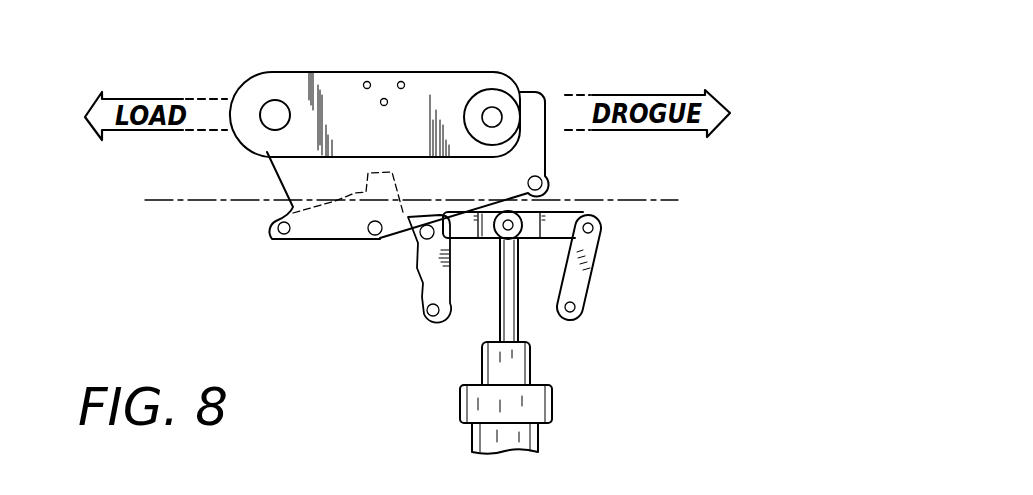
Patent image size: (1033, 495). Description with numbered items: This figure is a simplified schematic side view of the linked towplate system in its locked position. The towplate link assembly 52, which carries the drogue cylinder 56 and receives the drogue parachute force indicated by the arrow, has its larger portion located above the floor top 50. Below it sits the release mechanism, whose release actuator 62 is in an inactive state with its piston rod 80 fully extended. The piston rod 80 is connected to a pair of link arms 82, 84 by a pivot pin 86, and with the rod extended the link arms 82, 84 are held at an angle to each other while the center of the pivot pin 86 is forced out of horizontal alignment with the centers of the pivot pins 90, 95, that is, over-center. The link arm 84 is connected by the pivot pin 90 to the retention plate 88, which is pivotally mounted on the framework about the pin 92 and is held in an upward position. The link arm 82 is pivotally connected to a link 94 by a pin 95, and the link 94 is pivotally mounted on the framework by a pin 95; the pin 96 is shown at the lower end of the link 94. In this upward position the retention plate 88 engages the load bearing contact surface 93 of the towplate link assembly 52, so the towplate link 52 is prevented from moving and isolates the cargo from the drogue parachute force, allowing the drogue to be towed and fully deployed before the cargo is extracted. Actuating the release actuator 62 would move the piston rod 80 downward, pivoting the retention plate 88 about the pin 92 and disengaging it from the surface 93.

The floor top 50 is at (170, 202).
The towplate link assembly 52 is at (273, 181).
The drogue cylinder 56 is at (512, 105).
The release actuator 62 is at (553, 405).
The piston rod 80 is at (497, 322).
The link arm 82 is at (563, 213).
The link arm 84 is at (474, 243).
The pivot pin 86 is at (536, 243).
The retention plate 88 is at (417, 274).
The pivot pin 90 is at (414, 243).
The pin 92 is at (426, 312).
The contact surface 93 is at (405, 217).
The link 94 is at (597, 276).
The pin 95 is at (601, 236).
The lower pin 96 is at (584, 310).